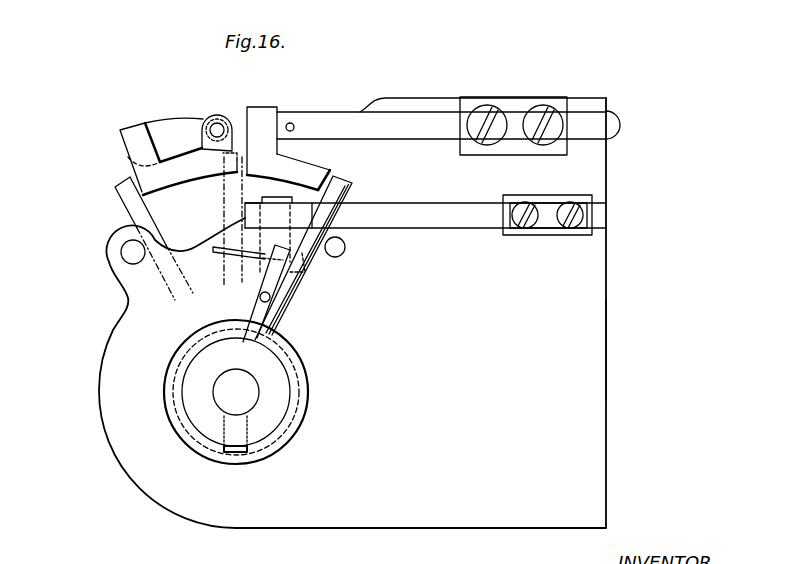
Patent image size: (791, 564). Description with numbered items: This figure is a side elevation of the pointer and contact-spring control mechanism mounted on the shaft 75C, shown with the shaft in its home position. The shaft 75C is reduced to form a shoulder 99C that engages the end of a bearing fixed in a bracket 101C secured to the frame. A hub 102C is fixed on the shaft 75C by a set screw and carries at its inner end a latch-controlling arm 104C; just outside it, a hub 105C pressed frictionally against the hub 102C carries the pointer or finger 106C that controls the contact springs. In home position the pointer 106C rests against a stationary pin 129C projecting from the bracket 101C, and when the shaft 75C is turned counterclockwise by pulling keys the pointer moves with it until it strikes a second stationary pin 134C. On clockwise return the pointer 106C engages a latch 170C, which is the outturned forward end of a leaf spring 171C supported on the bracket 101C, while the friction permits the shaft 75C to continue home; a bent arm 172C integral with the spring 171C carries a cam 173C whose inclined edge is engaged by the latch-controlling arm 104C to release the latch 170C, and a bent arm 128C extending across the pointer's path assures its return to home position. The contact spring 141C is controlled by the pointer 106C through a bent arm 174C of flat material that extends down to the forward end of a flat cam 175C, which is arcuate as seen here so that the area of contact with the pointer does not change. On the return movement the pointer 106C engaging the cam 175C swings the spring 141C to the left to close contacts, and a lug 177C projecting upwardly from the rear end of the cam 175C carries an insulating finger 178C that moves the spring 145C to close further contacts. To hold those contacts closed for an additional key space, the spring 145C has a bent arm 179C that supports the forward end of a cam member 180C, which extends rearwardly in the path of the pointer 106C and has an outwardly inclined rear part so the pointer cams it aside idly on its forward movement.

The shoulder 99C is at (350, 498).
The bracket 101C is at (585, 312).
The second stationary pin 134C is at (127, 253).
The bent arm 174C is at (132, 133).
The contact spring 141C is at (193, 113).
The lug 177C is at (200, 138).
The finger 178C is at (218, 128).
The flat cam 175C is at (198, 175).
The bent arm 179C is at (263, 125).
The bent arm 172C is at (203, 248).
The cam member 180C is at (312, 172).
The contact spring 145C is at (330, 122).
The leaf spring 171C is at (463, 222).
The latch 170C is at (247, 220).
The stationary pin 129C is at (345, 250).
The latch-controlling arm 104C is at (270, 282).
The bent arm 128C is at (272, 307).
The pointer 106C is at (353, 184).
The cam 173C is at (250, 298).
The shaft 75C is at (255, 390).
The hub 102C is at (290, 430).
The hub 105C is at (308, 400).